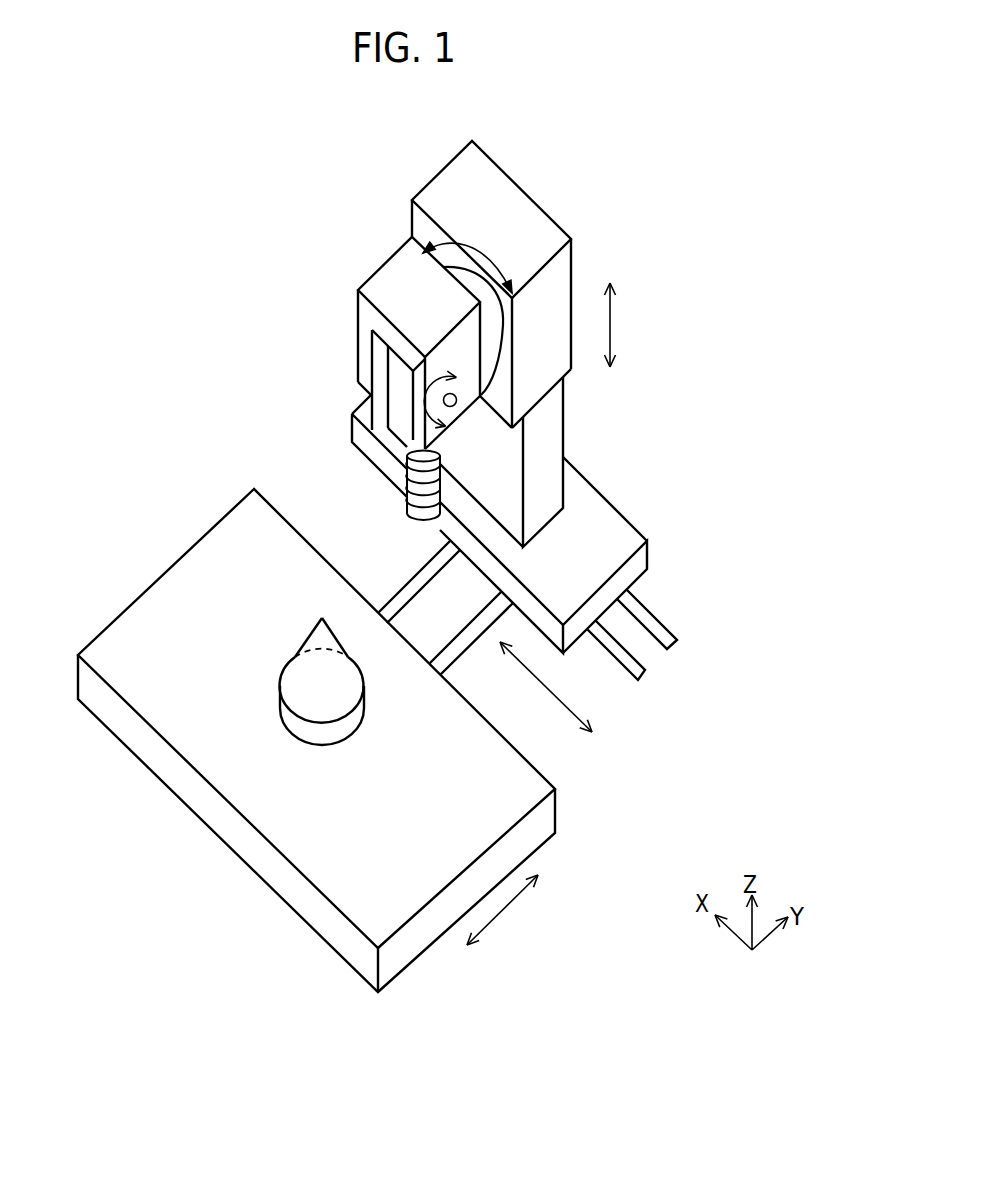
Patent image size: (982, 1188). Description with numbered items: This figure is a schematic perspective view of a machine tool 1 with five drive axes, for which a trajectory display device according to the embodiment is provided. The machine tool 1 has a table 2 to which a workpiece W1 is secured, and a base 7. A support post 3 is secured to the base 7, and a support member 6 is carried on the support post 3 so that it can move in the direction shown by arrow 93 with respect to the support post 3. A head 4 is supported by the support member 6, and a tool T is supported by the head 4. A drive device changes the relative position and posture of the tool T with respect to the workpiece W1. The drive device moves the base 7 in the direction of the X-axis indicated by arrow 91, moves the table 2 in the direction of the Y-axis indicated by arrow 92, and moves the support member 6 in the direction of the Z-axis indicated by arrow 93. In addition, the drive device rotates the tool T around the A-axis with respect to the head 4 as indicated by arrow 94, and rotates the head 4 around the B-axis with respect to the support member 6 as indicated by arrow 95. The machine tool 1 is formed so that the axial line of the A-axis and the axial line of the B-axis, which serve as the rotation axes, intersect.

The machine tool 1 is at (618, 204).
The table 2 is at (333, 930).
The support post 3 is at (557, 437).
The head 4 is at (358, 335).
The support member 6 is at (565, 268).
The base 7 is at (610, 520).
The arrow indicating X-axis direction 91 is at (563, 713).
The arrow indicating Y-axis direction 92 is at (510, 907).
The arrow indicating Z-axis direction 93 is at (610, 320).
The arrow indicating A-axis rotation 94 is at (430, 390).
The arrow indicating B-axis rotation 95 is at (473, 243).
The tool T is at (417, 507).
The workpiece W1 is at (280, 706).